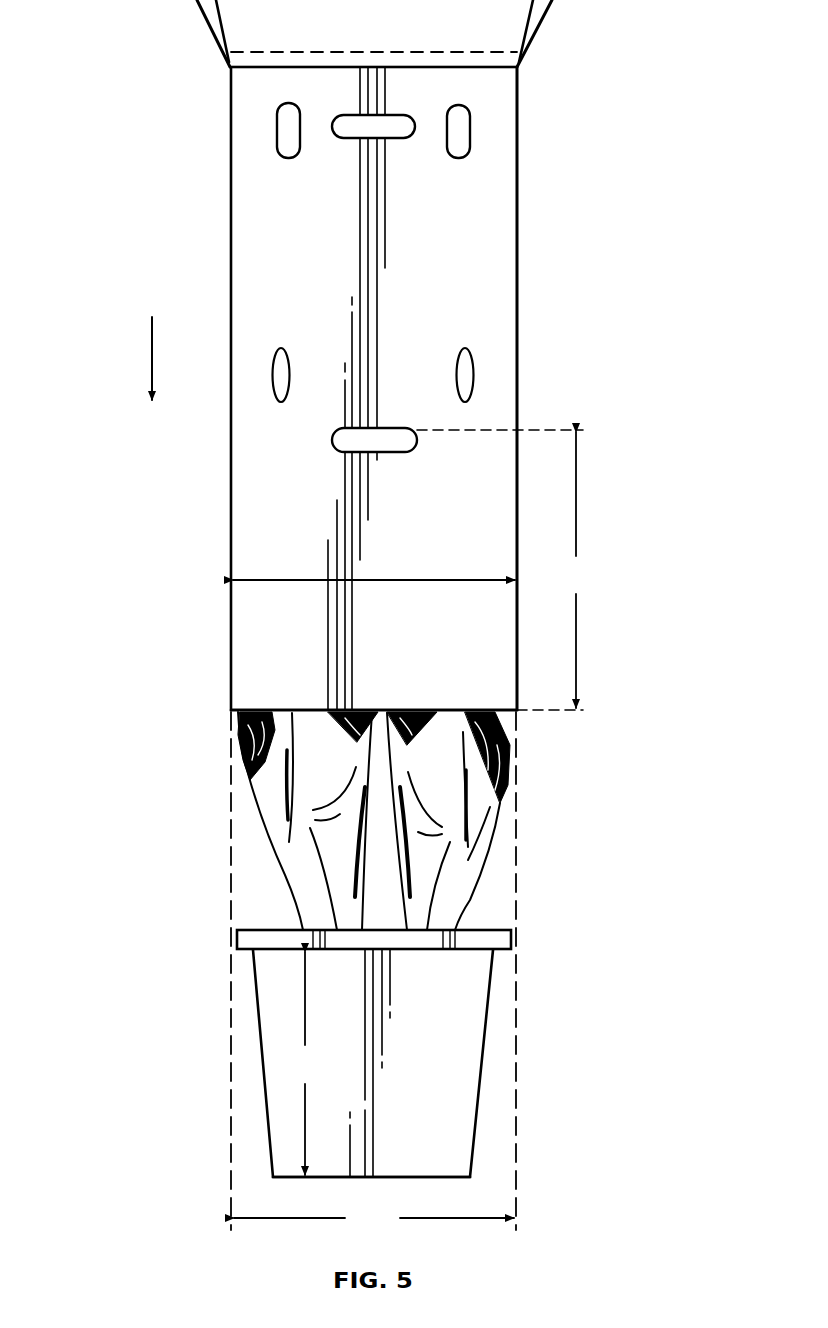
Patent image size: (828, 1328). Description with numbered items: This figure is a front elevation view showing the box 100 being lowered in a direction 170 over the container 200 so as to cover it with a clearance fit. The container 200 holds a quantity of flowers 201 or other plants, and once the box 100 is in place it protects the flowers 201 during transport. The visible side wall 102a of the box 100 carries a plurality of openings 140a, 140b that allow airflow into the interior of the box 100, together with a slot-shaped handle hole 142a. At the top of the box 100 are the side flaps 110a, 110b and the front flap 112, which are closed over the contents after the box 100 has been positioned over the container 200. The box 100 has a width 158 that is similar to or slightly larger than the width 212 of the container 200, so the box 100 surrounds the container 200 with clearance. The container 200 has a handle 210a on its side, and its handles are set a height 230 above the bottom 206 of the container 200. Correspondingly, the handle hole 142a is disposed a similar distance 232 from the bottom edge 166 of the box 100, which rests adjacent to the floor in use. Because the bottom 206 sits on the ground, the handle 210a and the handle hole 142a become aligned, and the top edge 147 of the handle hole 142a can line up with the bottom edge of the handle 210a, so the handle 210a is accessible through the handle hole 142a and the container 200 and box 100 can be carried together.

The box 100 is at (254, 217).
The side wall 102a is at (487, 228).
The side flap 110a is at (542, 5).
The side flap 110b is at (210, 32).
The front flap 112 is at (513, 33).
The opening 140a is at (292, 128).
The opening 140b is at (460, 128).
The handle hole 142a is at (383, 447).
The top edge of the handle holes 147 is at (383, 428).
The width 158 is at (317, 580).
The bottom edge 166 is at (305, 710).
The direction 170 is at (150, 363).
The container 200 is at (275, 982).
The flowers 201 is at (272, 790).
The bottom 206 is at (417, 1178).
The handle 210a is at (493, 942).
The width 212 is at (374, 1220).
The height 230 is at (306, 1063).
The distance 232 is at (558, 571).